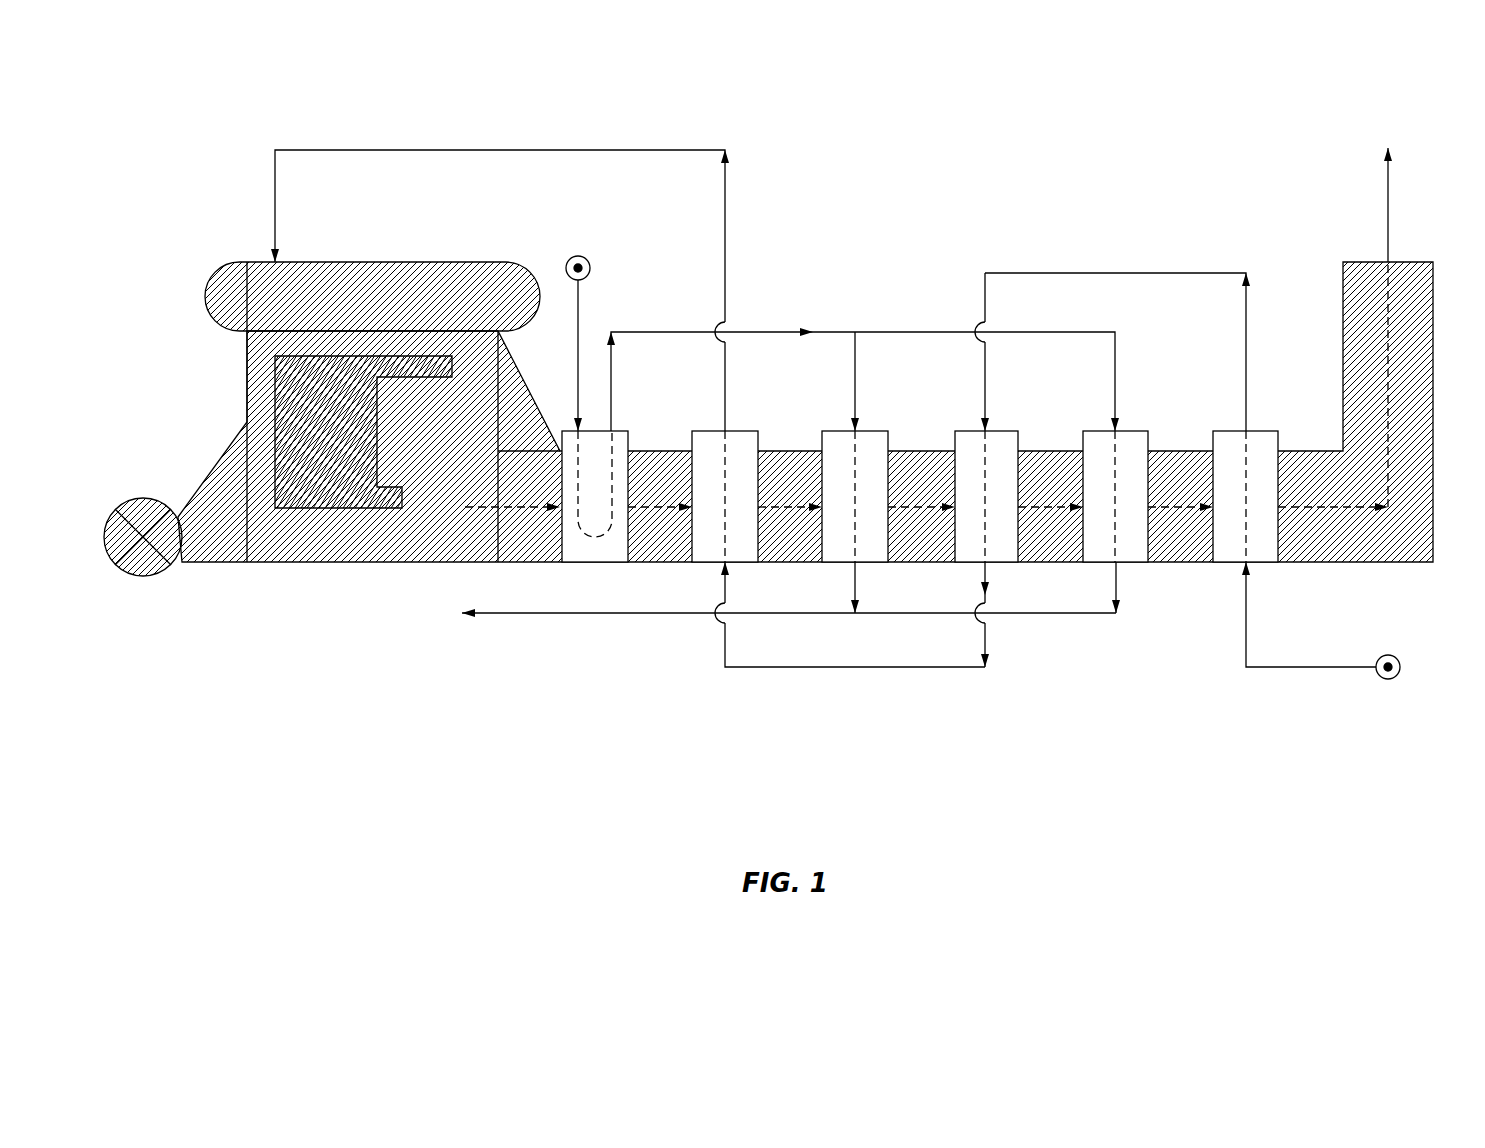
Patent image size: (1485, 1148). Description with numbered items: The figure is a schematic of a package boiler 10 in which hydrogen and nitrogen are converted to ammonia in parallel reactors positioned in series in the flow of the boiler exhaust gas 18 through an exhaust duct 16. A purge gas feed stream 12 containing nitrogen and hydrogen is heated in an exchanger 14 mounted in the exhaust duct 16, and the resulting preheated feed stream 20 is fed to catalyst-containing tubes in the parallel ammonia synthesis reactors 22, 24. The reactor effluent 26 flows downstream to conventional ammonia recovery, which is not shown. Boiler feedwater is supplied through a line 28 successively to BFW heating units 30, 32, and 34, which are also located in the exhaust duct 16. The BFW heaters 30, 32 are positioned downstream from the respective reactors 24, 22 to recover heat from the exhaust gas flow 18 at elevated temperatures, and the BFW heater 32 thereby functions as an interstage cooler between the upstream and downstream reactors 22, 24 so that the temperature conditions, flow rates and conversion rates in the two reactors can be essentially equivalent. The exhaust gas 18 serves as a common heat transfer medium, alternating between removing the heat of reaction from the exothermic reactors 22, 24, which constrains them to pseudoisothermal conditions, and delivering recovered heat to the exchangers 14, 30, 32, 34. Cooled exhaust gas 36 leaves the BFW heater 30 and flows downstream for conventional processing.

The package boiler 10 is at (185, 262).
The purge gas feed stream 12 is at (578, 308).
The exchanger 14 is at (617, 427).
The exhaust duct 16 is at (528, 565).
The boiler exhaust gas 18 is at (487, 500).
The preheated feed stream 20 is at (783, 332).
The ammonia synthesis reactor 22 is at (842, 427).
The ammonia synthesis reactor 24 is at (1127, 430).
The reactor effluent 26 is at (560, 620).
The line 28 is at (503, 147).
The BFW heating unit 30 is at (1263, 563).
The BFW heating unit 32 is at (1002, 563).
The BFW heating unit 34 is at (705, 565).
The cooled exhaust gas 36 is at (1388, 228).